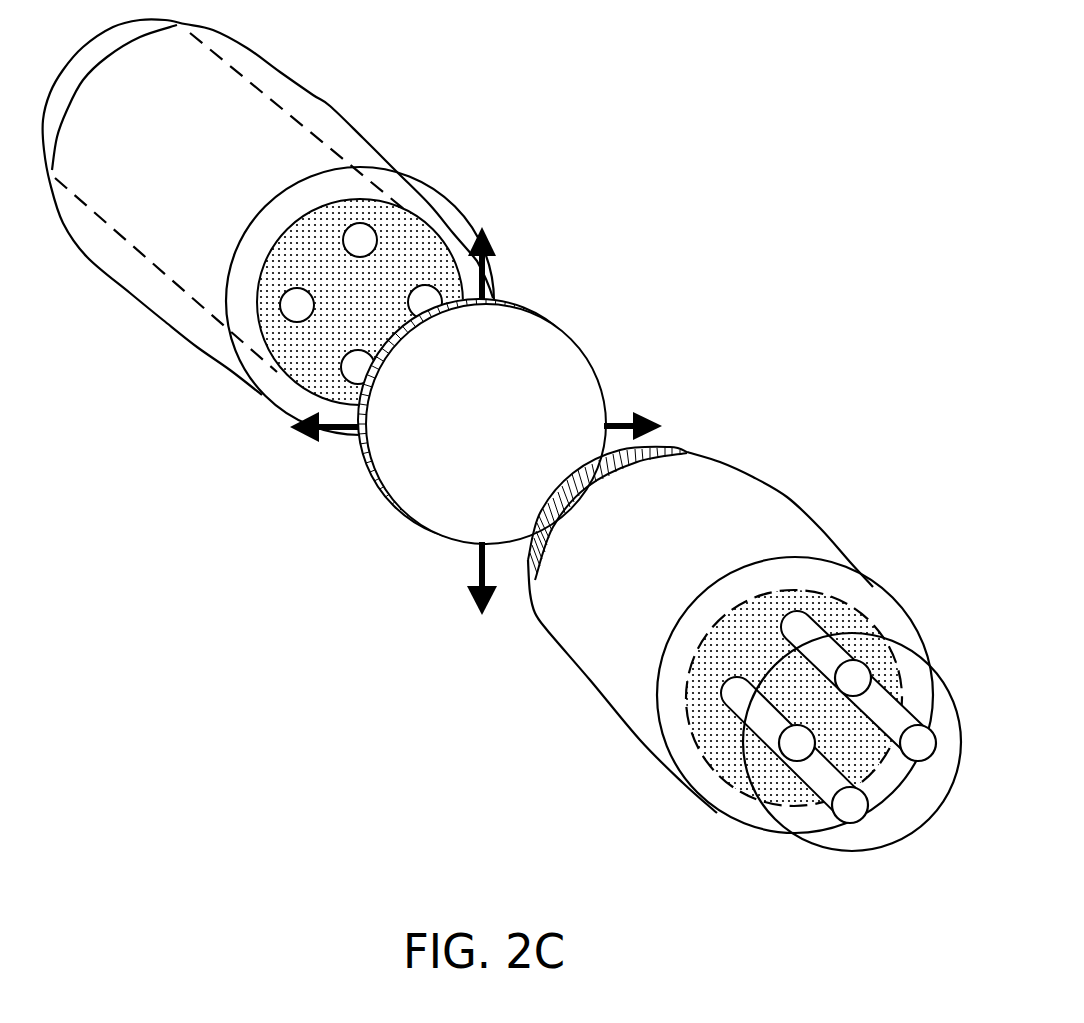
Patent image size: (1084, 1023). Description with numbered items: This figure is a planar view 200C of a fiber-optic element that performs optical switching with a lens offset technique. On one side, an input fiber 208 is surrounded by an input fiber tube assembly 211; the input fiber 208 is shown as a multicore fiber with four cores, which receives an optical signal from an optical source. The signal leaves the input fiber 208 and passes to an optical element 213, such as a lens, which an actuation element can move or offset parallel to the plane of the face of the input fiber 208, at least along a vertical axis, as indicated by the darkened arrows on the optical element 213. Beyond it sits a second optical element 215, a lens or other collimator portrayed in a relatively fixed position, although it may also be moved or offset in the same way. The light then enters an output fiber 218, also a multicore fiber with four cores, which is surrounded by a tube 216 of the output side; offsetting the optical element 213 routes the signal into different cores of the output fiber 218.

The planar view 200C is at (742, 68).
The input fiber tube assembly 211 is at (360, 128).
The input fiber 208 is at (433, 230).
The optical element 213 is at (558, 325).
The optical element 215 is at (677, 450).
The second tube / sleeve body 216 is at (783, 497).
The output fiber 218 is at (903, 648).